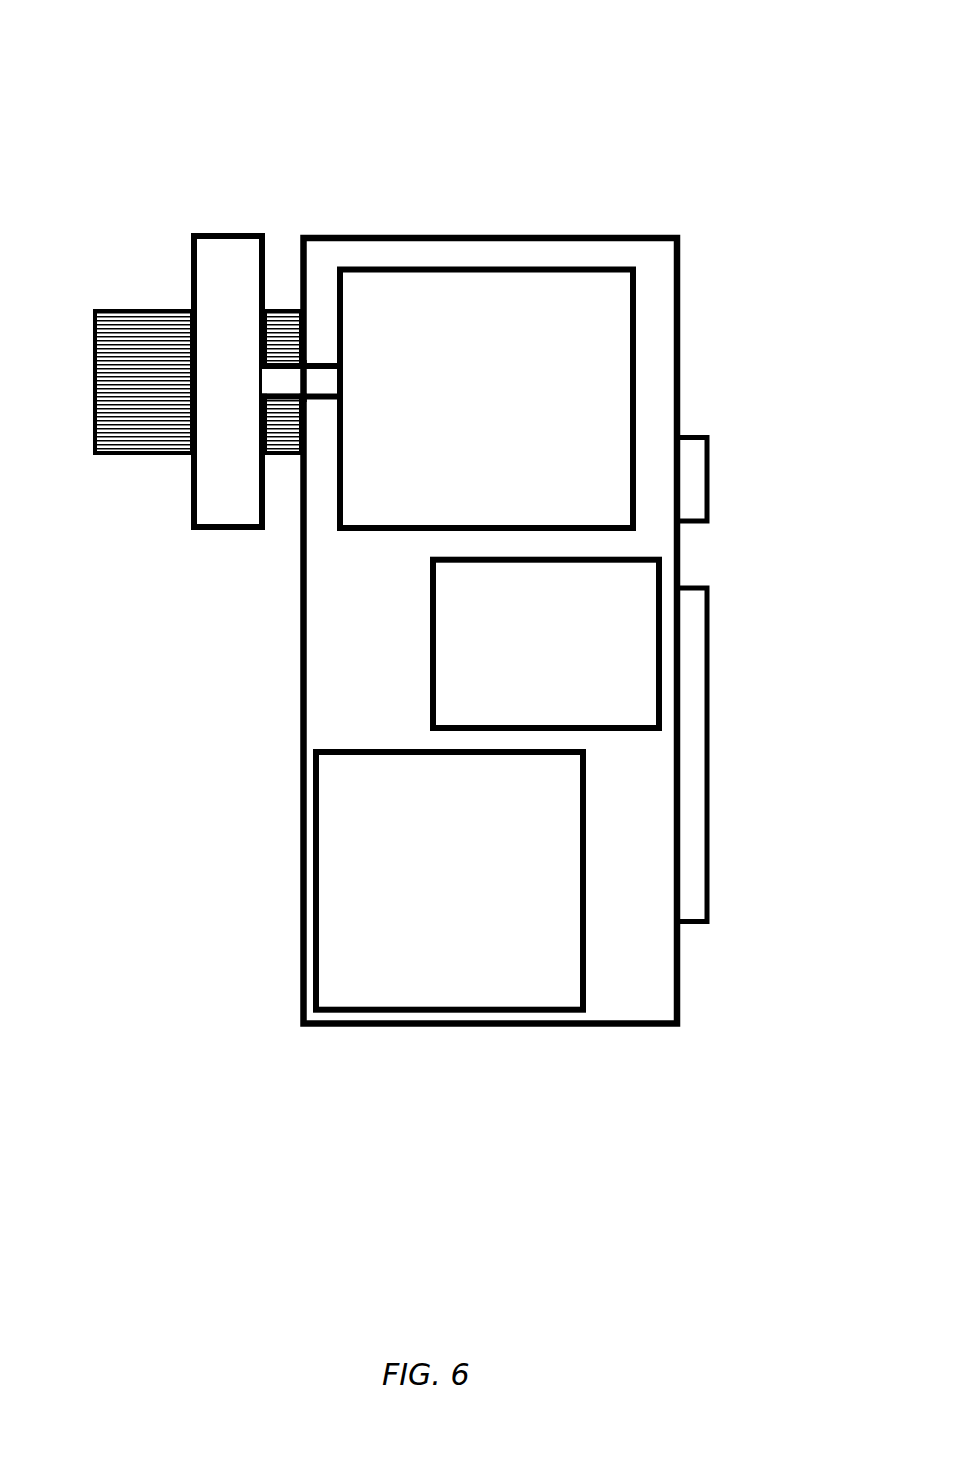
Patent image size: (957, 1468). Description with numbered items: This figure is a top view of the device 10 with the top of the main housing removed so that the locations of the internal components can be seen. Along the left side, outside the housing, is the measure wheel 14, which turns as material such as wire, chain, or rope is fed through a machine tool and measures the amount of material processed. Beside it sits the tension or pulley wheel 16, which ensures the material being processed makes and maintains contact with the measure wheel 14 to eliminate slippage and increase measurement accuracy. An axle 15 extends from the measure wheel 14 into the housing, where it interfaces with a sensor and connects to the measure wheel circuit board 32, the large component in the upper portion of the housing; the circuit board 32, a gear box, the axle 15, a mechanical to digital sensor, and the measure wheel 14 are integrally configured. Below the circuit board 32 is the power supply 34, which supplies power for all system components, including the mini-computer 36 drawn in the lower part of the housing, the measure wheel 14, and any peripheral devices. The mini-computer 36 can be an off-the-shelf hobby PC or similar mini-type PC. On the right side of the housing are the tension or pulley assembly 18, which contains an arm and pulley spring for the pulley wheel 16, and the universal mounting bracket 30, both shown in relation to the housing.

The device 10 is at (520, 70).
The measure wheel 14 is at (248, 258).
The axle 15 is at (287, 383).
The tension or pulley wheel 16 is at (140, 340).
The tension or pulley assembly 18 is at (693, 473).
The universal mounting bracket 30 is at (693, 753).
The measure wheel circuit board 32 is at (466, 307).
The power supply 34 is at (455, 693).
The mini-computer 36 is at (333, 808).